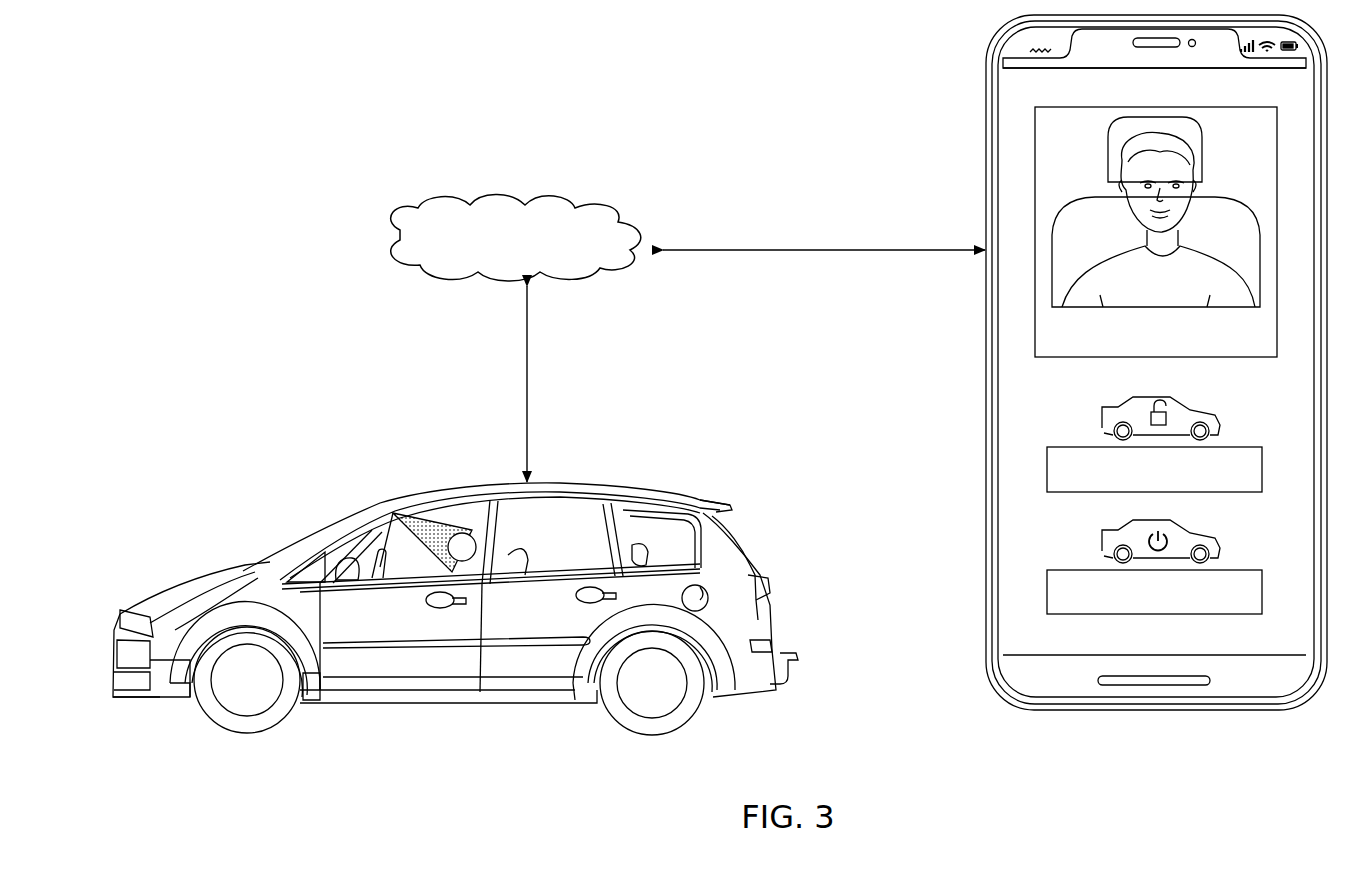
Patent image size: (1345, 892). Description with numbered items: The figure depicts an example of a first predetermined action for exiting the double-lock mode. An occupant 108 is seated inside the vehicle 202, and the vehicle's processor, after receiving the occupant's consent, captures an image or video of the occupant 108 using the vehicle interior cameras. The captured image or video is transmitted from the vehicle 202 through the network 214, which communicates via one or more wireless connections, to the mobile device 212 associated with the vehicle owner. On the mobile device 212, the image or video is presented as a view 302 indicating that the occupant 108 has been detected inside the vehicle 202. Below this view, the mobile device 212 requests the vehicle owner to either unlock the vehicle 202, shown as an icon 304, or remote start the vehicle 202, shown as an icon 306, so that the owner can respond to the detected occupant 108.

The occupant 108 is at (462, 533).
The vehicle 202 is at (626, 492).
The mobile device 212 is at (986, 97).
The network 214 is at (500, 205).
The view 302 is at (1035, 183).
The unlock icon 304 is at (1047, 470).
The remote start icon 306 is at (1047, 593).